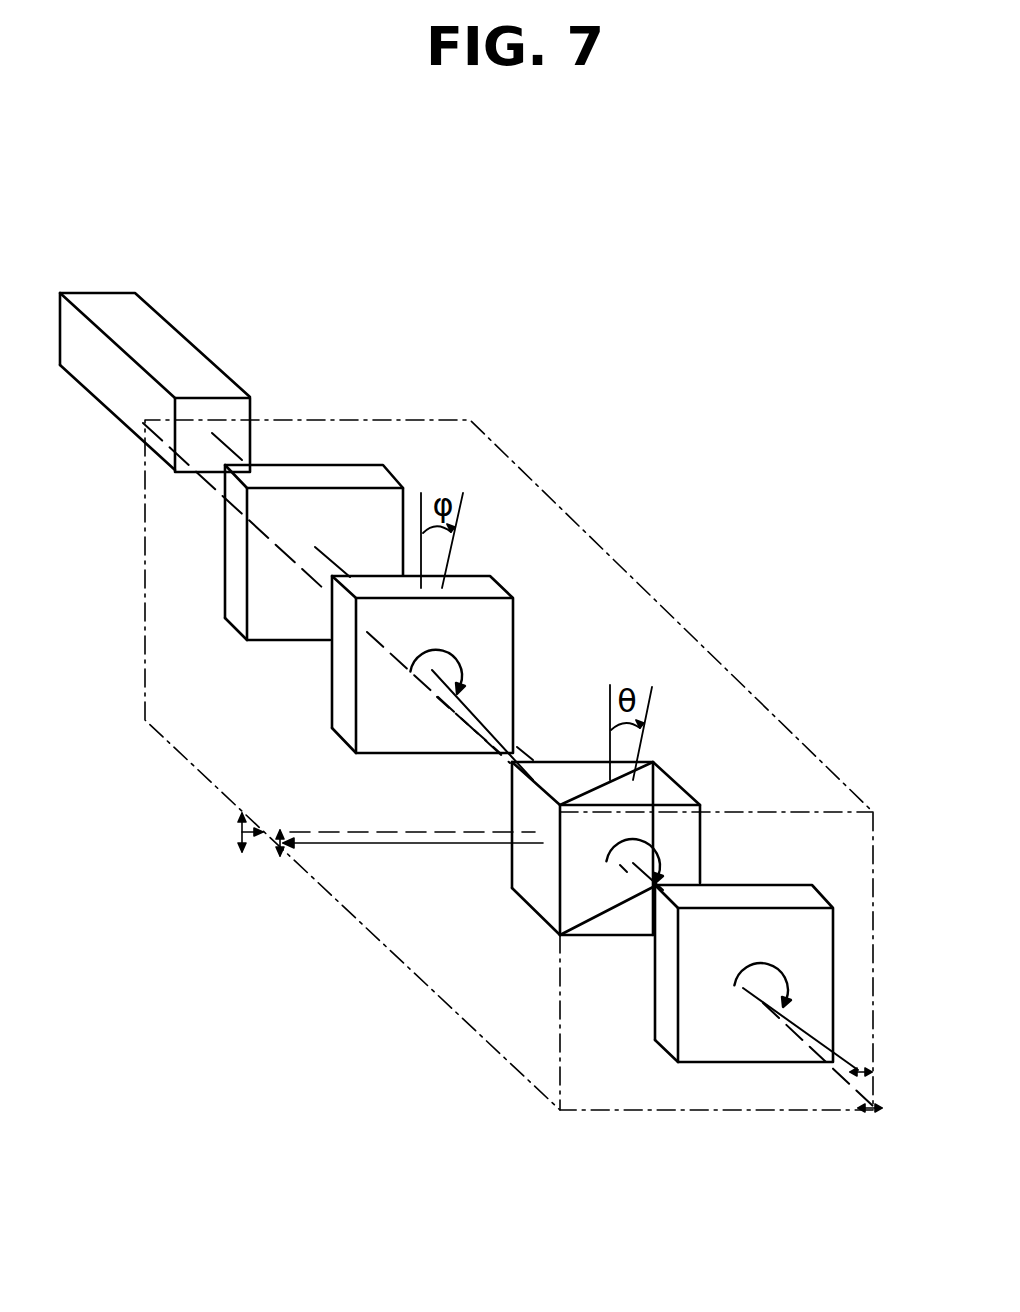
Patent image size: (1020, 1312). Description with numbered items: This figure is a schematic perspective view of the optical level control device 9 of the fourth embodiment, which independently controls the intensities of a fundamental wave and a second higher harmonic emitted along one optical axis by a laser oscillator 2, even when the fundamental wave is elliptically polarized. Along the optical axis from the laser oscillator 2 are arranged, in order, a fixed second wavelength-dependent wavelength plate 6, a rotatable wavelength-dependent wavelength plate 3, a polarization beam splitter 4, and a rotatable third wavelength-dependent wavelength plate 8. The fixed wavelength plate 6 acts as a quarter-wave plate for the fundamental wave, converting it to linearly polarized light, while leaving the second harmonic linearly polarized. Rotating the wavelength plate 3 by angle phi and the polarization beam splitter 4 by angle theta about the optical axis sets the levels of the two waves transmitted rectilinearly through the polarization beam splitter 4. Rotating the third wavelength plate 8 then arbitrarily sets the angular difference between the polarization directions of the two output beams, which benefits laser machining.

The laser oscillator 2 is at (183, 332).
The second wavelength-dependent wavelength plate 6 is at (387, 472).
The optical level control device 9 is at (587, 540).
The wavelength-dependent wavelength plate 3 is at (513, 657).
The polarization beam splitter 4 is at (702, 850).
The third wavelength-dependent wavelength plate 8 is at (837, 970).